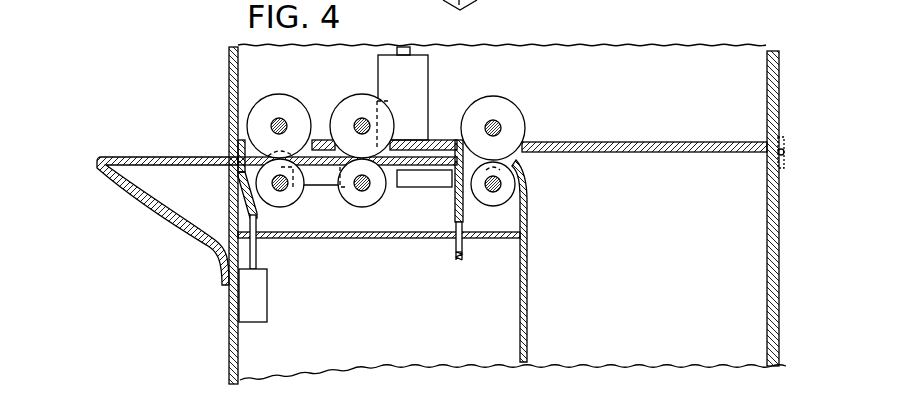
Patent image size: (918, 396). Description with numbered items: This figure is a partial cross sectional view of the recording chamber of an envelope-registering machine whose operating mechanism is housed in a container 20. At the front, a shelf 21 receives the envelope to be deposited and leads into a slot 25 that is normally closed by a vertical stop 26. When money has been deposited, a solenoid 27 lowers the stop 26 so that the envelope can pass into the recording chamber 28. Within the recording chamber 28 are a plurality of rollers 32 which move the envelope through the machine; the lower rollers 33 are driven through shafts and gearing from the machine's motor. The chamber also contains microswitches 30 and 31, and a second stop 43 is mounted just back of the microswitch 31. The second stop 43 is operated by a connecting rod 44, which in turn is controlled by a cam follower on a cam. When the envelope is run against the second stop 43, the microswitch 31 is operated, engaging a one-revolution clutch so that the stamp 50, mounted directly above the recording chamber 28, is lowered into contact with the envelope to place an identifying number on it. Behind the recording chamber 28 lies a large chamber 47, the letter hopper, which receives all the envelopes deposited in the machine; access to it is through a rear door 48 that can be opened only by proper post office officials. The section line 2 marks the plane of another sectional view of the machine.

The section line 2- 2 is at (97, 156).
The container 20 is at (229, 75).
The shelf 21 is at (143, 157).
The slot 25 is at (229, 153).
The vertical stop 26 is at (238, 186).
The solenoid 27 is at (269, 300).
The recording chamber 28 is at (319, 153).
The microswitch 30 is at (313, 186).
The microswitch 31 is at (412, 183).
The rollers 32 is at (544, 135).
The lower rollers 33 is at (274, 204).
The second stop 43 is at (455, 214).
The connecting rod 44 is at (455, 252).
The large chamber 47 is at (651, 266).
The rear door 48 is at (779, 258).
The stamp 50 is at (428, 73).